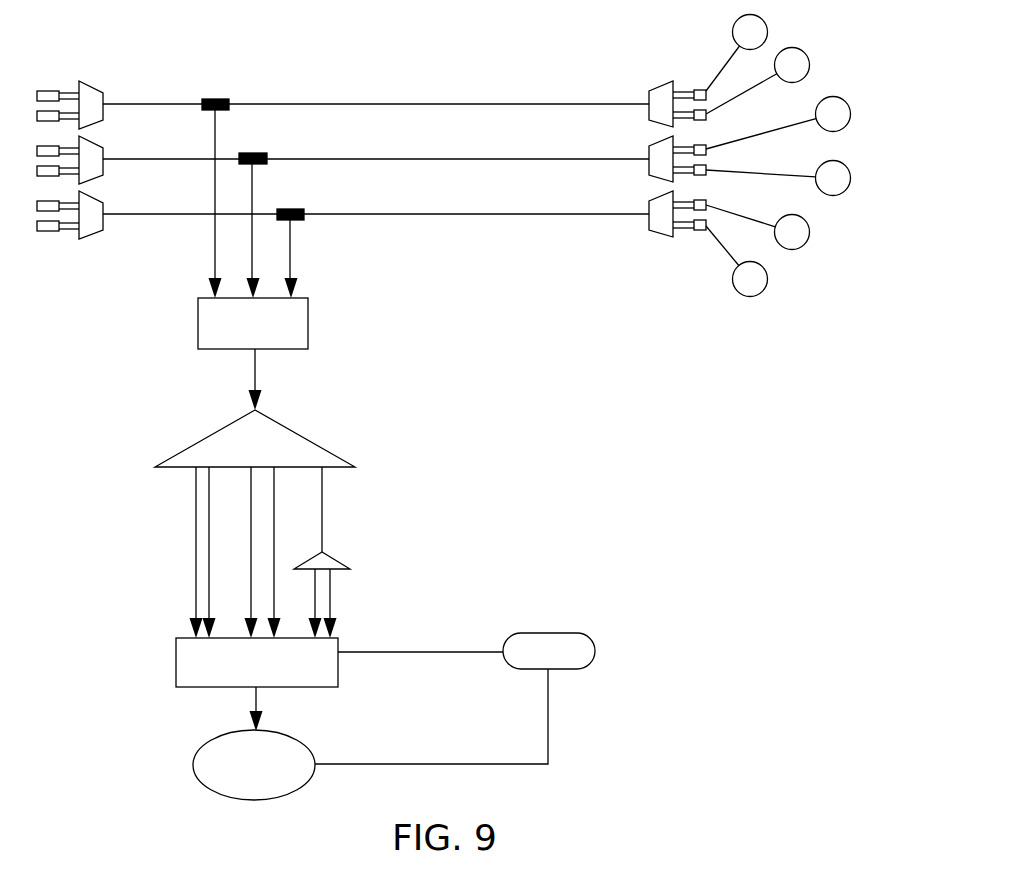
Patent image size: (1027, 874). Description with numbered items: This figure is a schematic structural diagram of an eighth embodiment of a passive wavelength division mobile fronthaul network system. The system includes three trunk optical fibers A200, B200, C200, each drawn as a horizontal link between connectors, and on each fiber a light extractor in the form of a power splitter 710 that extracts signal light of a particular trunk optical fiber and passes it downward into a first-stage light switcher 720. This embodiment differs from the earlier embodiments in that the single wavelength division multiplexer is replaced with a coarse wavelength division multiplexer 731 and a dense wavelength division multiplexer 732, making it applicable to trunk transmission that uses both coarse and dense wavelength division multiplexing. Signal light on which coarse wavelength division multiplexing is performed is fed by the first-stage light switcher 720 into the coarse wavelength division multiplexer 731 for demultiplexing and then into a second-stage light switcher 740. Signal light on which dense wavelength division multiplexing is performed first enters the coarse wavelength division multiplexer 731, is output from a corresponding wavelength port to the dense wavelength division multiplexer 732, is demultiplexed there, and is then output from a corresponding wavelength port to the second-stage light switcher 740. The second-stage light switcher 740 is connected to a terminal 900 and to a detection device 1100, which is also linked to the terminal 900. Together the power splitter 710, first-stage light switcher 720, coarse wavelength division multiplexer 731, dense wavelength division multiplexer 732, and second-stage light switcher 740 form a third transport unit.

The power splitter 710 is at (215, 99).
The trunk optical fiber A200 is at (498, 104).
The trunk optical fiber B200 is at (510, 159).
The trunk optical fiber C200 is at (514, 214).
The first-stage light switcher 720 is at (308, 317).
The coarse wavelength division multiplexer 731 is at (222, 429).
The dense wavelength division multiplexer 732 is at (338, 558).
The second-stage light switcher 740 is at (338, 670).
The terminal 900 is at (548, 633).
The detection device 1100 is at (307, 745).